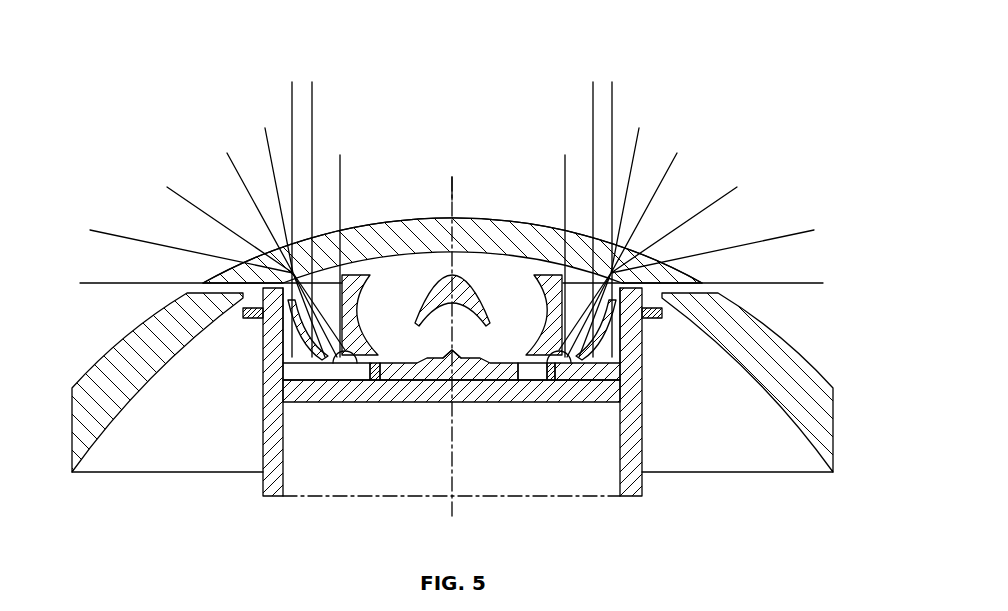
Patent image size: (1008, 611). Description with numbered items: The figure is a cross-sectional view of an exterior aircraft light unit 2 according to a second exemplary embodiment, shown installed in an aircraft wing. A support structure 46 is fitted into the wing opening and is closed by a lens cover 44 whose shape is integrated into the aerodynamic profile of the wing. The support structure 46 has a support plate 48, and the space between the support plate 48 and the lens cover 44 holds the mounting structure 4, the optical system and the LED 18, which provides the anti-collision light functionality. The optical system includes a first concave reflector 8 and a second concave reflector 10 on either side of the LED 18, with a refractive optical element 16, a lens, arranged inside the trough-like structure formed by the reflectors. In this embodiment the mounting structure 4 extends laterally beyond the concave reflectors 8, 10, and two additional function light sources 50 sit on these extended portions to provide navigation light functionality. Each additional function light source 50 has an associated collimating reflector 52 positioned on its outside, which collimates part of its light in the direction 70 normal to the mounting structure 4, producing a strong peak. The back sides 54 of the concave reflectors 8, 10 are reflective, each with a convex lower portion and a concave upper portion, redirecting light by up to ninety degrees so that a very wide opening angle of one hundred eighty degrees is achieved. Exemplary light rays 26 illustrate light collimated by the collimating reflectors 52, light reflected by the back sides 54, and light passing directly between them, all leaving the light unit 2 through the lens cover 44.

The exterior aircraft light unit 2 is at (386, 188).
The mounting structure 4 is at (388, 362).
The first concave reflector 8 is at (374, 290).
The second concave reflector 10 is at (534, 290).
The refractive optical element 16 is at (465, 280).
The LED 18 is at (458, 352).
The exemplary light rays 26 is at (613, 100).
The lens cover 44 is at (490, 222).
The support structure 46 is at (643, 405).
The support plate 48 is at (587, 403).
The additional function light sources 50 is at (333, 370).
The collimating reflectors 52 is at (285, 350).
The back sides 54 is at (352, 364).
The direction normal to the mounting structure 70 is at (455, 195).